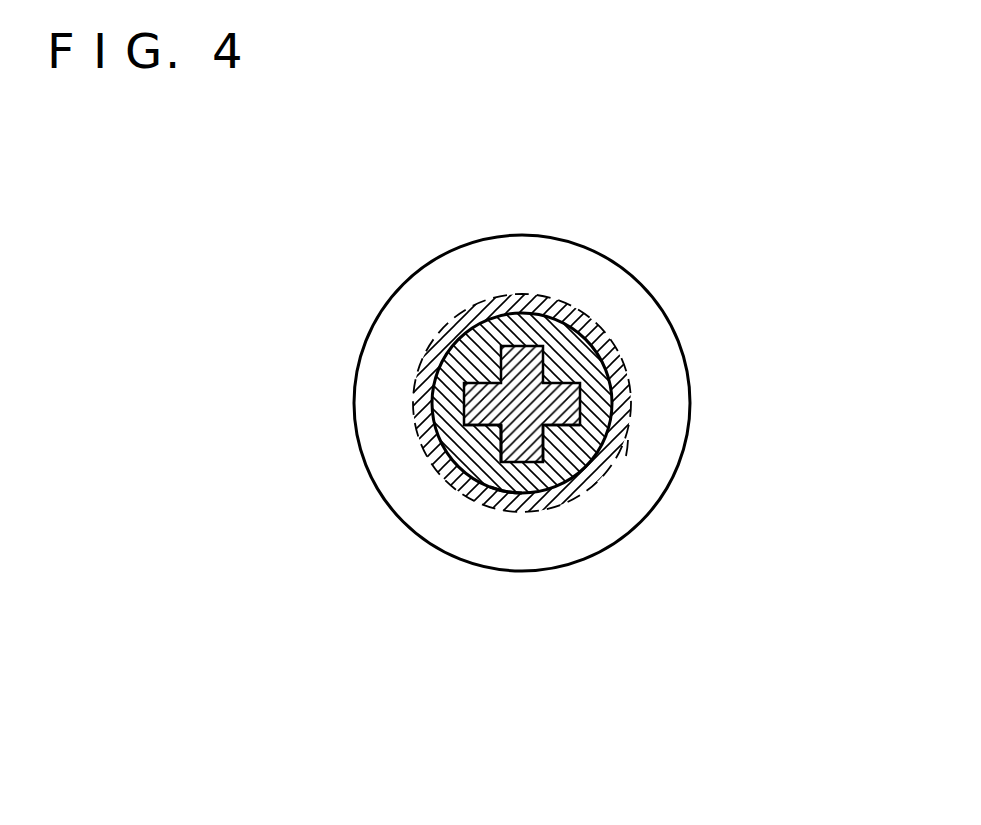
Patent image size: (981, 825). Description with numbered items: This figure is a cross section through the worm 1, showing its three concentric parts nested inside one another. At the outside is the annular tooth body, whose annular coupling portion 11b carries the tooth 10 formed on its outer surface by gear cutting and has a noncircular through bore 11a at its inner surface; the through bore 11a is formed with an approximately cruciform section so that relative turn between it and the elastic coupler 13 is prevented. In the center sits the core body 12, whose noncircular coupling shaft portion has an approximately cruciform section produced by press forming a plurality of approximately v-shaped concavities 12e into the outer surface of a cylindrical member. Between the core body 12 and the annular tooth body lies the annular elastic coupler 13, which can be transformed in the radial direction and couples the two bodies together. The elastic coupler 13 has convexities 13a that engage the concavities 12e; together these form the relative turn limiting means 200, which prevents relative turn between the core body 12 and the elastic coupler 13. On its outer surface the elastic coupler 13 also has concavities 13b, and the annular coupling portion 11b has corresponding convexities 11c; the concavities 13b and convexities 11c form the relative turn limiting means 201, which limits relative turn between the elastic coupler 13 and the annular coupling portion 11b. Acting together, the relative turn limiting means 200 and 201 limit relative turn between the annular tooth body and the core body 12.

The worm 1 is at (577, 334).
The tooth 10 is at (577, 400).
The noncircular through bore 11a is at (600, 411).
The annular coupling portion 11b is at (608, 355).
The convexities 11c is at (580, 345).
The core body 12 is at (447, 414).
The concavities 12e is at (365, 615).
The elastic coupler 13 is at (549, 490).
The convexities 13a is at (252, 532).
The concavities 13b is at (580, 458).
The relative turn limiting means 200 is at (500, 483).
The relative turn limiting means 201 is at (611, 448).